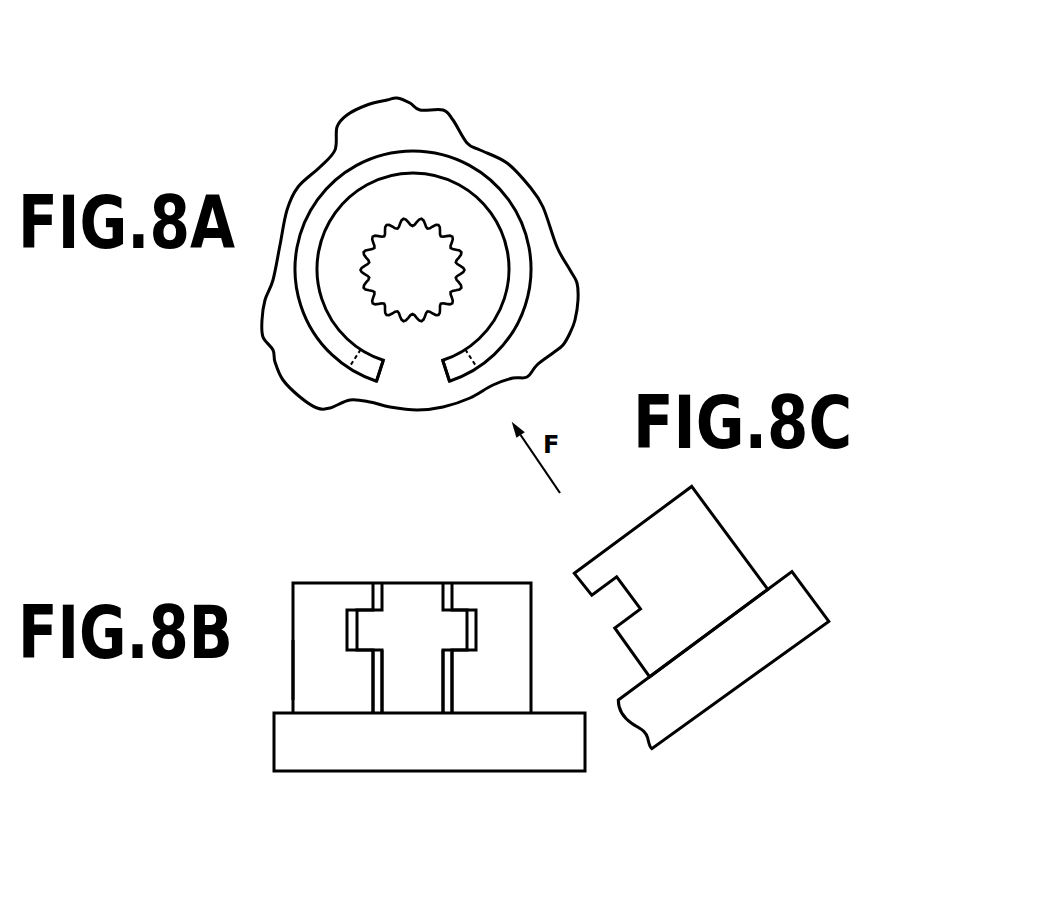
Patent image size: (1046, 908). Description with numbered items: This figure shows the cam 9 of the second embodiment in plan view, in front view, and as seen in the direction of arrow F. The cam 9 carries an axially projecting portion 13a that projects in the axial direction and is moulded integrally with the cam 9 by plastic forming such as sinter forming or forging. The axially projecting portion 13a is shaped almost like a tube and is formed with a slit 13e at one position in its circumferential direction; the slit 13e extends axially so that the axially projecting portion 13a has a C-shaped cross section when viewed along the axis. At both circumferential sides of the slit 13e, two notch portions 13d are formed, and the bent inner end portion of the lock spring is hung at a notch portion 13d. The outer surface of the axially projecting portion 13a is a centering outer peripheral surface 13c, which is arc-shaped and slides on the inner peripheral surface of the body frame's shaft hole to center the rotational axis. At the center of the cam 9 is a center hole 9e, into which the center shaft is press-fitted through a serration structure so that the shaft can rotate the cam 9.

In FIG. 8A, the cam 9 is at (390, 117).
In FIG. 8B, the cam 9 is at (512, 750).
In FIG. 8C, the cam 9 is at (760, 642).
In FIG. 8A, the center hole 9e is at (425, 260).
In FIG. 8A, the axially projecting portion 13a is at (460, 177).
In FIG. 8B, the axially projecting portion 13a is at (347, 593).
In FIG. 8C, the axially projecting portion 13a is at (735, 570).
In FIG. 8B, the centering outer peripheral surface 13c is at (315, 668).
In FIG. 8B, the notch portions 13d is at (366, 633).
In FIG. 8A, the slit 13e is at (402, 375).
In FIG. 8B, the slit 13e is at (408, 610).